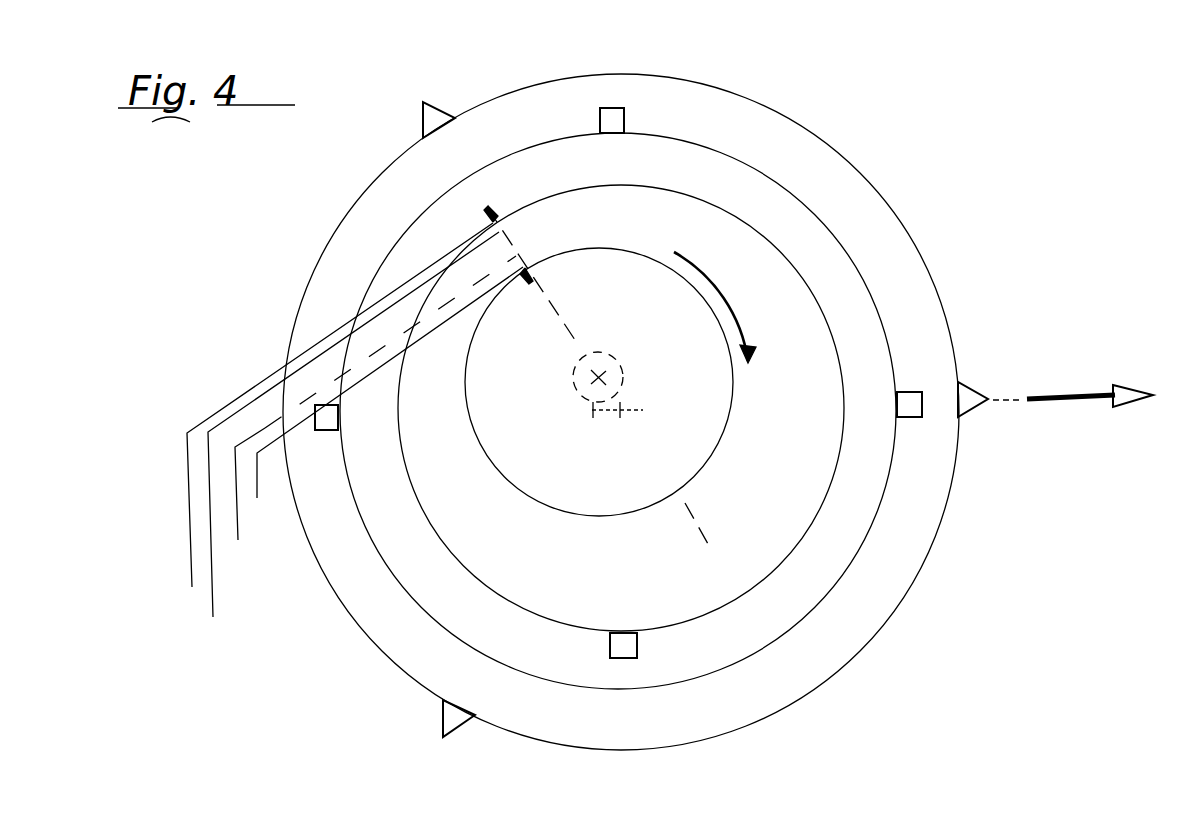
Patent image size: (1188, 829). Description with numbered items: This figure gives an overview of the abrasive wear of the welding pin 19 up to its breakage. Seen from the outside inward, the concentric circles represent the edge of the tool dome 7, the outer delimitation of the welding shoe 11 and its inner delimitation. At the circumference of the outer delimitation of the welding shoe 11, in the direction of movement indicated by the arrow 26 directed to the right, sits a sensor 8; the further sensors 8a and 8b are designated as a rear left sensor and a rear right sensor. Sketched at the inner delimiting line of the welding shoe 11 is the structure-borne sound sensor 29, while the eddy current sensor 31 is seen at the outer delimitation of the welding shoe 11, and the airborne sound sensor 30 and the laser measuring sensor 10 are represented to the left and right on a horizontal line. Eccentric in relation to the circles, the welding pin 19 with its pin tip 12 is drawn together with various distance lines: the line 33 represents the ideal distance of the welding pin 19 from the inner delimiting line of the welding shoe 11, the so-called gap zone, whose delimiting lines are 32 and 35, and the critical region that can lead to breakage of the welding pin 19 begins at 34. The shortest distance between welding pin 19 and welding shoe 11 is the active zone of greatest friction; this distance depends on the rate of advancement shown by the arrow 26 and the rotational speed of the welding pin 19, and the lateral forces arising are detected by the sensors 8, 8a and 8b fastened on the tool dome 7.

The tool dome 7 is at (952, 492).
The sensor 8 is at (972, 387).
The rear left sensor 8a is at (423, 120).
The rear right sensor 8b is at (443, 708).
The laser measuring sensor 10 is at (910, 390).
The welding shoe 11 is at (877, 522).
The pin tip 12 is at (595, 403).
The welding pin 19 is at (713, 455).
The arrow 26 is at (1073, 405).
The structure-borne sound sensor 29 is at (637, 645).
The airborne sound sensor 30 is at (330, 430).
The eddy current sensor 31 is at (624, 120).
The delimiting line of the gap zone 32 is at (388, 403).
The ideal line 33 is at (373, 419).
The critical region line 34 is at (353, 438).
The delimiting line of the gap zone 35 is at (326, 426).